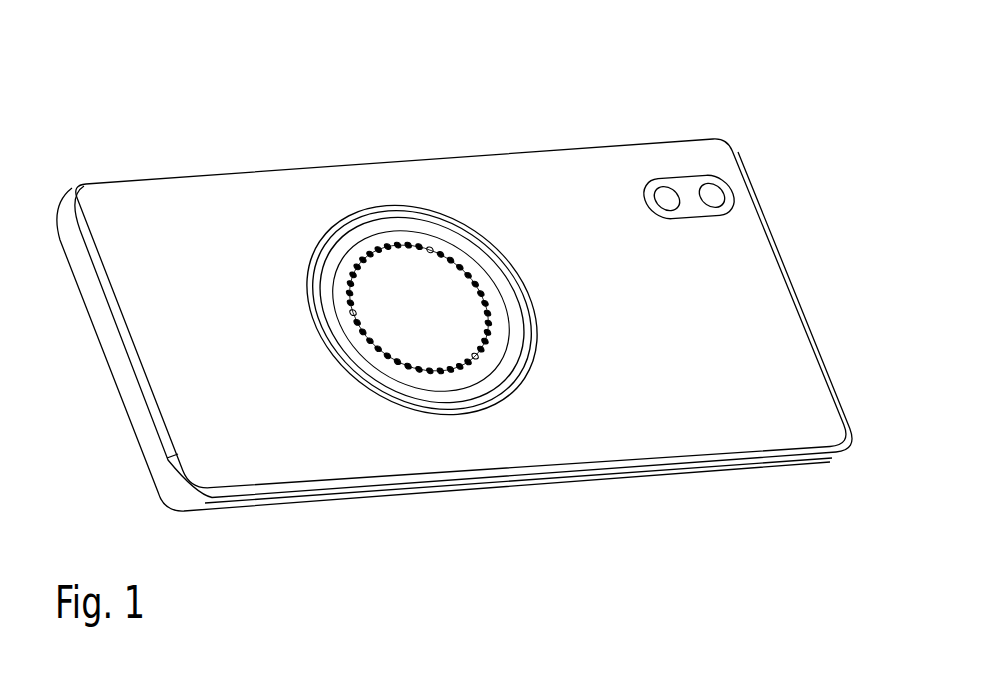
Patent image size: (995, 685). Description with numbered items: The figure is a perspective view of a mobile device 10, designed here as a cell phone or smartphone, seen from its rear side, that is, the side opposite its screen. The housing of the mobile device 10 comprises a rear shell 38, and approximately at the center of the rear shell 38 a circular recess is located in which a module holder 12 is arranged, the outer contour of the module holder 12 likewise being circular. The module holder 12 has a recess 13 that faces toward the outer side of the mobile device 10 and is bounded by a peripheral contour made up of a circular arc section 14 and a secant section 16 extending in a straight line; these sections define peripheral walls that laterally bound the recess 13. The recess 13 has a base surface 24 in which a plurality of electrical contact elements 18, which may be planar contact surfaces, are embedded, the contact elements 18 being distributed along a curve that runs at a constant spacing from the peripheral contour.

The mobile device 10 is at (454, 277).
The module holder 12 is at (433, 308).
The recess 13 is at (447, 340).
The circular arc section 14 is at (378, 327).
The secant section 16 is at (433, 231).
The electrical contact elements 18 is at (388, 247).
The base surface 24 is at (388, 297).
The rear shell 38 is at (641, 410).